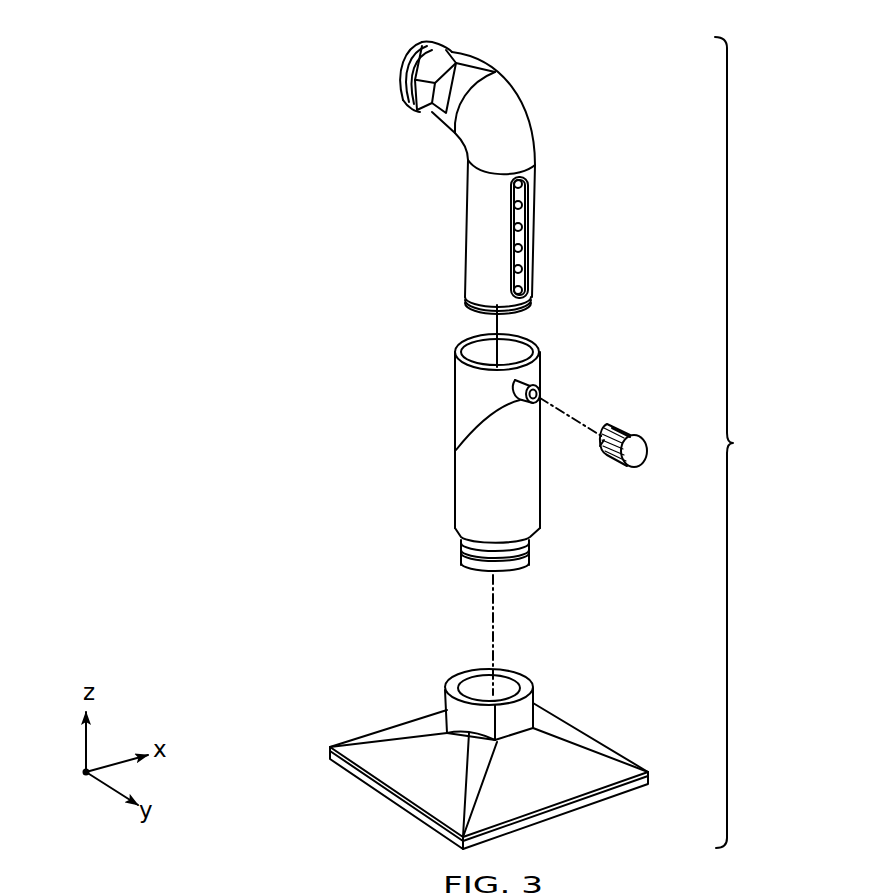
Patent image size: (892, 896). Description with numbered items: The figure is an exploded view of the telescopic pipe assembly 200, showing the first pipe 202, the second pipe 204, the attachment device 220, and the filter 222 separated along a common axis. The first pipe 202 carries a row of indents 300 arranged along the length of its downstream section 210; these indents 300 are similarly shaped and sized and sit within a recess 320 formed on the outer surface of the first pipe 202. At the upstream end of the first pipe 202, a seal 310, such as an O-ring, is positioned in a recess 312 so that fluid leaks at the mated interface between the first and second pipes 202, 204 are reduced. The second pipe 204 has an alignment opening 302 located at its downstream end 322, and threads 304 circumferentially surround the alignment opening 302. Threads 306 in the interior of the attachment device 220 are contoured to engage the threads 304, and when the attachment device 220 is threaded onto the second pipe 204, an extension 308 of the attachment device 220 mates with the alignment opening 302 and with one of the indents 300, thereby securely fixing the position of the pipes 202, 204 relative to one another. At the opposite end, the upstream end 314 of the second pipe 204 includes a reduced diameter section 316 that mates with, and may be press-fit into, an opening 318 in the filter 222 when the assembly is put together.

The telescopic pipe assembly 200 is at (745, 442).
The first pipe 202 is at (452, 165).
The second pipe 204 is at (443, 473).
The downstream section 210 is at (512, 77).
The attachment device 220 is at (647, 435).
The filter 222 is at (462, 729).
The indents 300 is at (559, 227).
The alignment opening 302 is at (547, 380).
The threads 304 is at (512, 381).
The threads 306 is at (593, 440).
The extension 308 is at (603, 437).
The seal 310 is at (527, 300).
The recess 312 is at (463, 298).
The upstream end 314 is at (462, 575).
The reduced diameter section 316 is at (450, 543).
The opening 318 is at (507, 687).
The recess 320 is at (528, 238).
The downstream end 322 is at (487, 353).